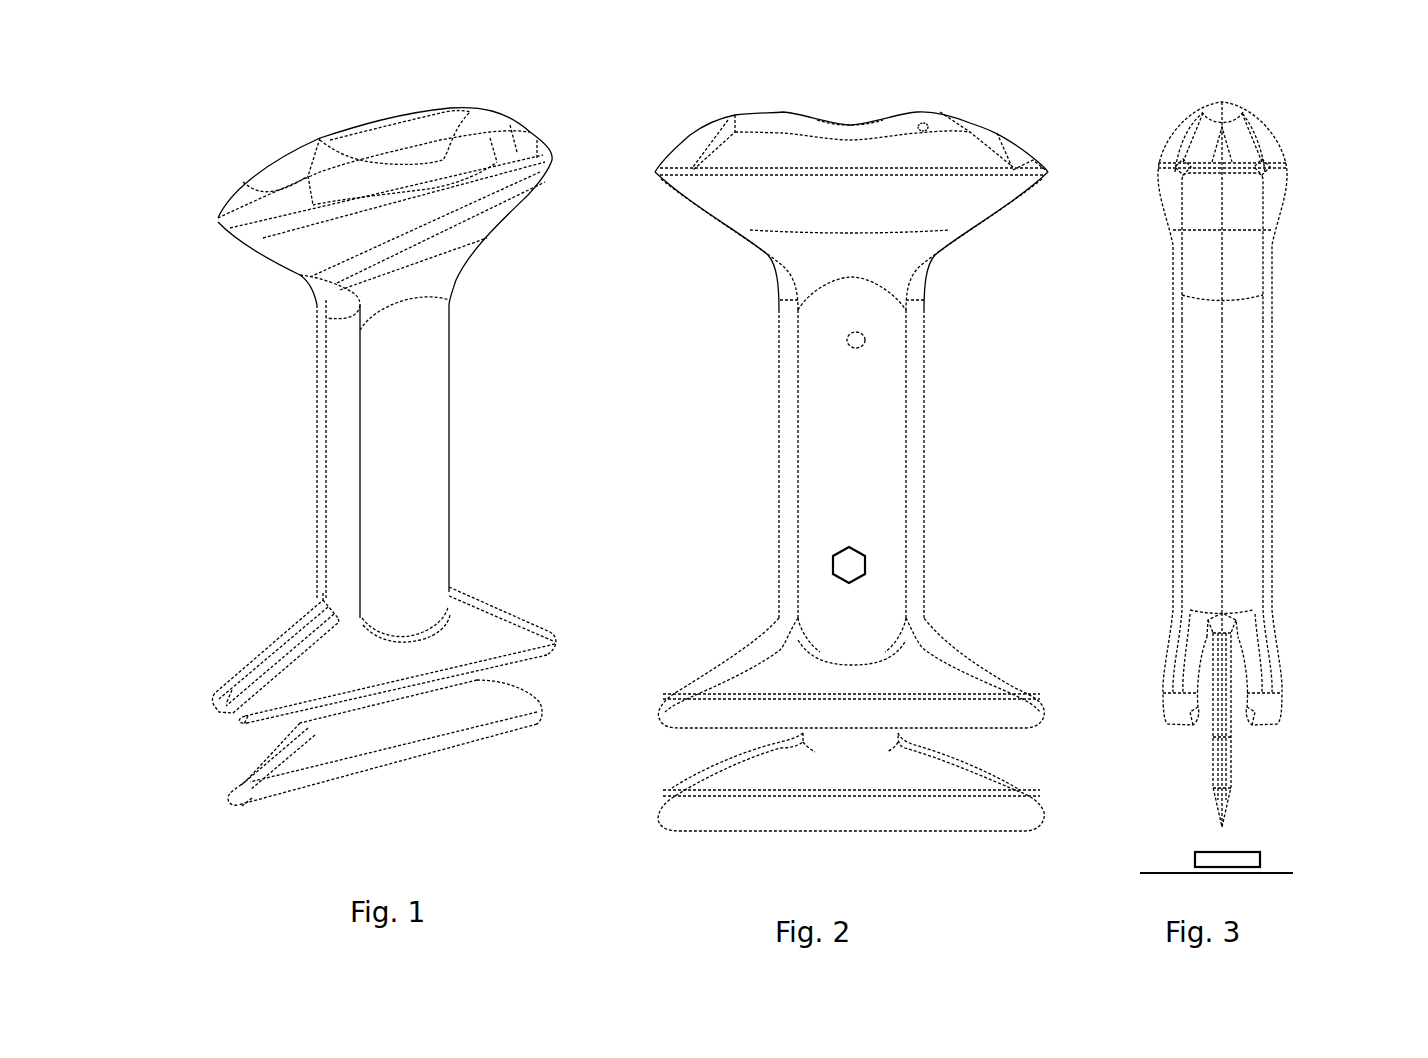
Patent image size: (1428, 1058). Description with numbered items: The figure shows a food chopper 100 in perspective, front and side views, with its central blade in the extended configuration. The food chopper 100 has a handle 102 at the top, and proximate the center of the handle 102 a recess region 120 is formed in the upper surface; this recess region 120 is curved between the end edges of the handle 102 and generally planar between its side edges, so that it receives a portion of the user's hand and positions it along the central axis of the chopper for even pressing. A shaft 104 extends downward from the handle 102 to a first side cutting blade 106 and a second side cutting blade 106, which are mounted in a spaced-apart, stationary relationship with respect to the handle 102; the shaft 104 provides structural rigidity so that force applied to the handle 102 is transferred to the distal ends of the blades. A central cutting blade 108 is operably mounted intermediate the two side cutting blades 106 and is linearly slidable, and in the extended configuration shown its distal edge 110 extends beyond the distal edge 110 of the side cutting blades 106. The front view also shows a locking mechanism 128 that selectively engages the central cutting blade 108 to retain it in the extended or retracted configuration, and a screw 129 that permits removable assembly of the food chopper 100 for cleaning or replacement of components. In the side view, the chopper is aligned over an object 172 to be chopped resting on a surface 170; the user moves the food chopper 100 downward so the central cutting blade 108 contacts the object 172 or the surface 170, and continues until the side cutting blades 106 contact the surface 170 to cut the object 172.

In FIG. 1, the food chopper 100 is at (246, 344).
In FIG. 2, the food chopper 100 is at (995, 508).
In FIG. 3, the food chopper 100 is at (1300, 334).
In FIG. 1, the handle 102 is at (522, 190).
In FIG. 2, the handle 102 is at (727, 202).
In FIG. 3, the handle 102 is at (1165, 200).
In FIG. 1, the shaft 104 is at (345, 452).
In FIG. 2, the shaft 104 is at (812, 450).
In FIG. 3, the shaft 104 is at (1200, 425).
In FIG. 1, the side cutting blade 106 is at (295, 638).
In FIG. 2, the side cutting blade 106 is at (758, 677).
In FIG. 3, the side cutting blade 106 is at (1172, 688).
In FIG. 1, the central cutting blade 108 is at (477, 705).
In FIG. 2, the central cutting blade 108 is at (946, 811).
In FIG. 3, the central cutting blade 108 is at (1214, 775).
In FIG. 1, the distal edge 110 is at (266, 787).
In FIG. 1, the recess region 120 is at (376, 143).
In FIG. 2, the recess region 120 is at (849, 116).
In FIG. 2, the locking mechanism 128 is at (833, 562).
In FIG. 2, the screw 129 is at (846, 338).
In FIG. 3, the surface 170 is at (1285, 876).
In FIG. 3, the object 172 is at (1240, 849).